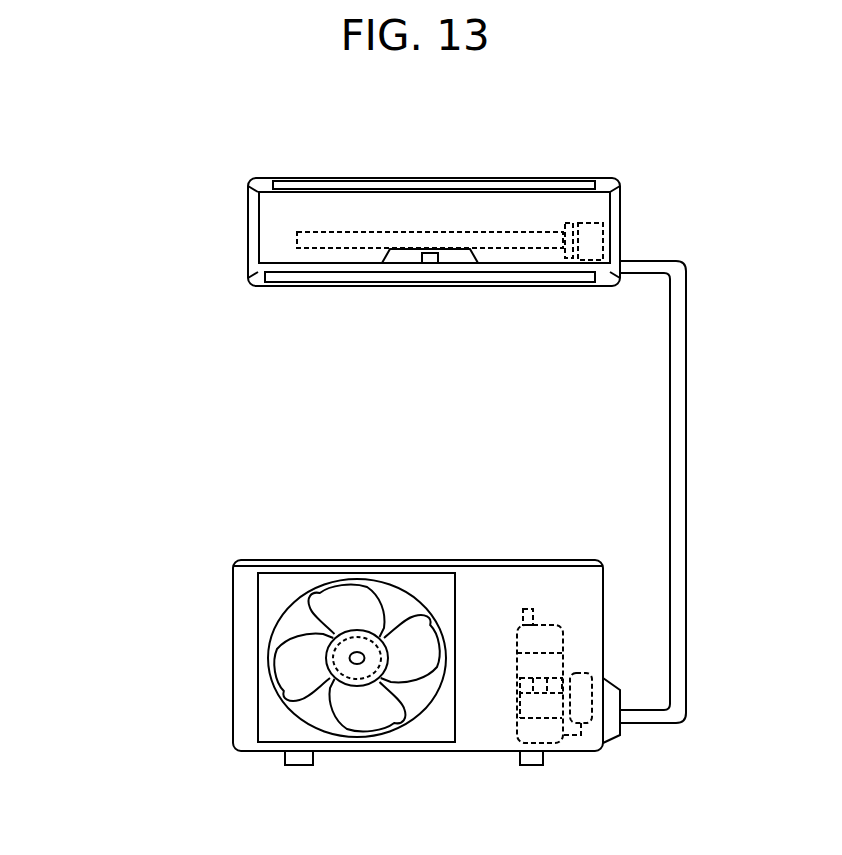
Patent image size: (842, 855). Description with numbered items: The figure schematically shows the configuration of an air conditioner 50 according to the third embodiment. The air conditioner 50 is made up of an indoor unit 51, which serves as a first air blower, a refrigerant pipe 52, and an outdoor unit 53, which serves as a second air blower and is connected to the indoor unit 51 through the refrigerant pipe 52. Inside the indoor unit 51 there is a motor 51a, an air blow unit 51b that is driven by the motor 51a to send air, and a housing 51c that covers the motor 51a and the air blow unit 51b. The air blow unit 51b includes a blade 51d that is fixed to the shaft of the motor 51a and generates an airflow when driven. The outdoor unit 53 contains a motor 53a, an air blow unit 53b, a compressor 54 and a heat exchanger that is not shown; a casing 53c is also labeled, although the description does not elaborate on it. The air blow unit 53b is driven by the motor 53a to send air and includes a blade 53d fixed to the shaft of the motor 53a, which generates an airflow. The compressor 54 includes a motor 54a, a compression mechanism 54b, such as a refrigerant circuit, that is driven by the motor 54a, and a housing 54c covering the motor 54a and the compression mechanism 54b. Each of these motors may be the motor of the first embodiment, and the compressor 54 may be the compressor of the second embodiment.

The air conditioner 50 is at (125, 166).
The indoor unit 51 is at (307, 152).
The motor 51a is at (603, 243).
The air blow unit 51b is at (297, 236).
The housing 51c is at (425, 179).
The blade 51d is at (571, 262).
The refrigerant pipe 52 is at (687, 431).
The outdoor unit 53 is at (306, 512).
The motor 53a is at (357, 690).
The air blow unit 53b is at (258, 620).
The outdoor unit casing 53c is at (418, 560).
The blade 53d is at (287, 665).
The compressor 54 is at (503, 633).
The motor 54a is at (538, 662).
The compression mechanism 54b is at (538, 705).
The housing 54c is at (520, 728).